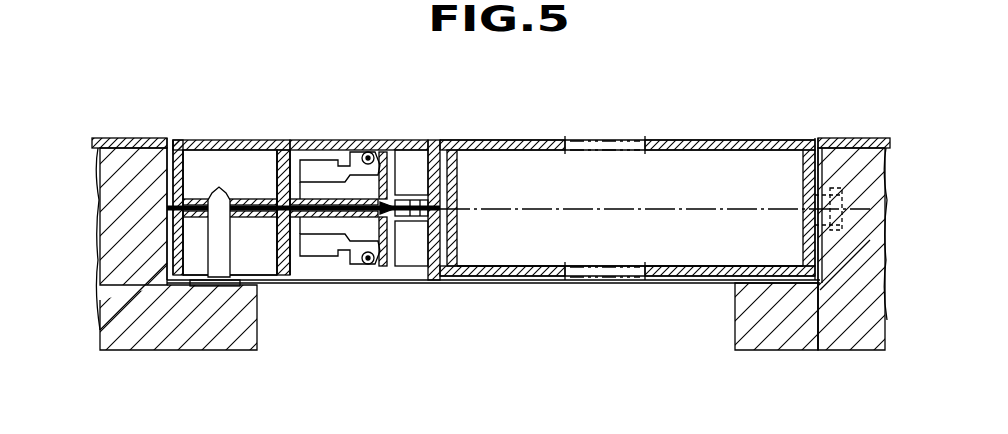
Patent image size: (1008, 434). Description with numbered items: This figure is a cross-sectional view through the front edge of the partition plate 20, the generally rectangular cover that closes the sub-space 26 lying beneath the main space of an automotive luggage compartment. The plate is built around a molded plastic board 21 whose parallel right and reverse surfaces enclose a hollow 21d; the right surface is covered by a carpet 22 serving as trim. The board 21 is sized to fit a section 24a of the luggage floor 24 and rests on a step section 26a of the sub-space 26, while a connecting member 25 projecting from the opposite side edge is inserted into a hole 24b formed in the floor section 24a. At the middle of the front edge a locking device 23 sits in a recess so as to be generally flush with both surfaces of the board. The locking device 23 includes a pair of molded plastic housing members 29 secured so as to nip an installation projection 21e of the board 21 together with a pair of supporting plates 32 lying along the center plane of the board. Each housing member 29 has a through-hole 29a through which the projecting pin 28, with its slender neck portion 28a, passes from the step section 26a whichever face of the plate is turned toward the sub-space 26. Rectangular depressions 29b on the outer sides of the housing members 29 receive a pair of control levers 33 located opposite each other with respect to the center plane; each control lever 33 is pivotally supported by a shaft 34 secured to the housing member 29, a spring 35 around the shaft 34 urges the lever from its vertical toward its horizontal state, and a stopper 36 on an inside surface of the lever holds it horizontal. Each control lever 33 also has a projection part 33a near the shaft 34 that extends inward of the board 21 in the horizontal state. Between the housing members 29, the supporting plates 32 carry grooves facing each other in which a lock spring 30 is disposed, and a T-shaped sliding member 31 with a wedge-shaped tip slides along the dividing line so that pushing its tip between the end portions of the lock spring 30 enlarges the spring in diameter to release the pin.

The partition plate 20 is at (476, 214).
The board 21 is at (726, 137).
The hollow 21d is at (676, 283).
The installation projection 21e is at (425, 215).
The carpet 22 is at (785, 137).
The locking device 23 is at (291, 199).
The luggage floor 24 is at (123, 136).
The section 24a is at (103, 137).
The holes 24b is at (832, 138).
The connecting members 25 is at (838, 235).
The sub-space 26 is at (568, 331).
The step section 26a is at (208, 285).
The projecting pin 28 is at (250, 285).
The neck portion 28a is at (210, 137).
The housing members 29 is at (172, 137).
The through-holes 29a is at (227, 137).
The rectangular depressions 29b is at (430, 137).
The lock spring 30 is at (207, 222).
The sliding member 31 is at (266, 192).
The supporting plates 32 is at (170, 208).
The control levers 33 is at (335, 137).
The projection part 33a is at (420, 162).
The shaft 34 is at (368, 137).
The spring 35 is at (385, 137).
The stopper 36 is at (313, 137).